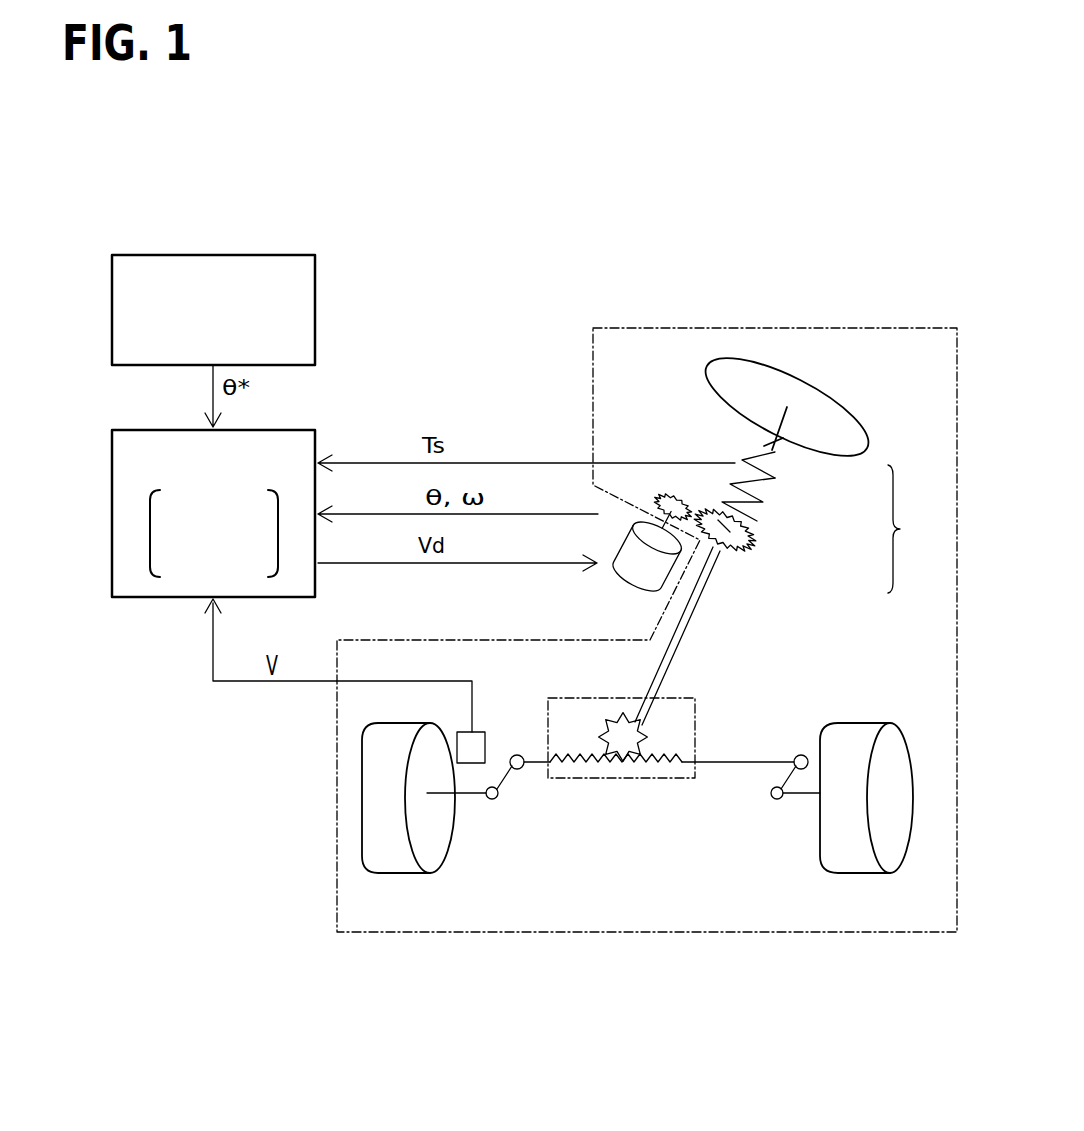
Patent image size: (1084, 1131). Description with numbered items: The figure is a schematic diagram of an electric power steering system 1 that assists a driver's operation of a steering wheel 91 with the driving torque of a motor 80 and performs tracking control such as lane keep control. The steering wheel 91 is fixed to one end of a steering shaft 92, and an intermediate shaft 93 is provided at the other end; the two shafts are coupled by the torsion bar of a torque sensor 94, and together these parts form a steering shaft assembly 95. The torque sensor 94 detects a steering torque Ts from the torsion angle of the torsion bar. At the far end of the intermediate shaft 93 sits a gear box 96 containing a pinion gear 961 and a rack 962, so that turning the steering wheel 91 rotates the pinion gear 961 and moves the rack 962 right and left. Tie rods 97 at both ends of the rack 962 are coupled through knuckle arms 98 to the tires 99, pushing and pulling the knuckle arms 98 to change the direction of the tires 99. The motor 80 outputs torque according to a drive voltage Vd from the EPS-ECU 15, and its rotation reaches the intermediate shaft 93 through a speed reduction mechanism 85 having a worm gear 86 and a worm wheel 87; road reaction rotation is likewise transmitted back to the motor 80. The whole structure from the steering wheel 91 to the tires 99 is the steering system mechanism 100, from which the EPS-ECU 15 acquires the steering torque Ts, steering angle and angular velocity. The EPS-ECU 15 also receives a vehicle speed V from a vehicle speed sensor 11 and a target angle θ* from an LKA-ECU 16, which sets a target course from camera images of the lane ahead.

The electric power steering system 1 is at (547, 313).
The vehicle speed sensor 11 is at (477, 732).
The EPS-ECU 15 is at (112, 514).
The LKA-ECU 16 is at (112, 313).
The motor 80 is at (640, 588).
The speed reduction mechanism 85 is at (682, 459).
The worm gear 86 is at (665, 495).
The worm wheel 87 is at (712, 513).
The steering wheel 91 is at (858, 415).
The steering shaft 92 is at (787, 452).
The intermediate shaft 93 is at (725, 571).
The torque sensor 94 is at (783, 486).
The steering shaft assembly 95 is at (912, 529).
The gear box 96 is at (629, 738).
The pinion gear 961 is at (612, 718).
The rack 962 is at (646, 773).
The tie rods 97 is at (525, 770).
The knuckle arms 98 is at (470, 800).
The tires 99 is at (396, 845).
The steering system mechanism 100 is at (767, 328).